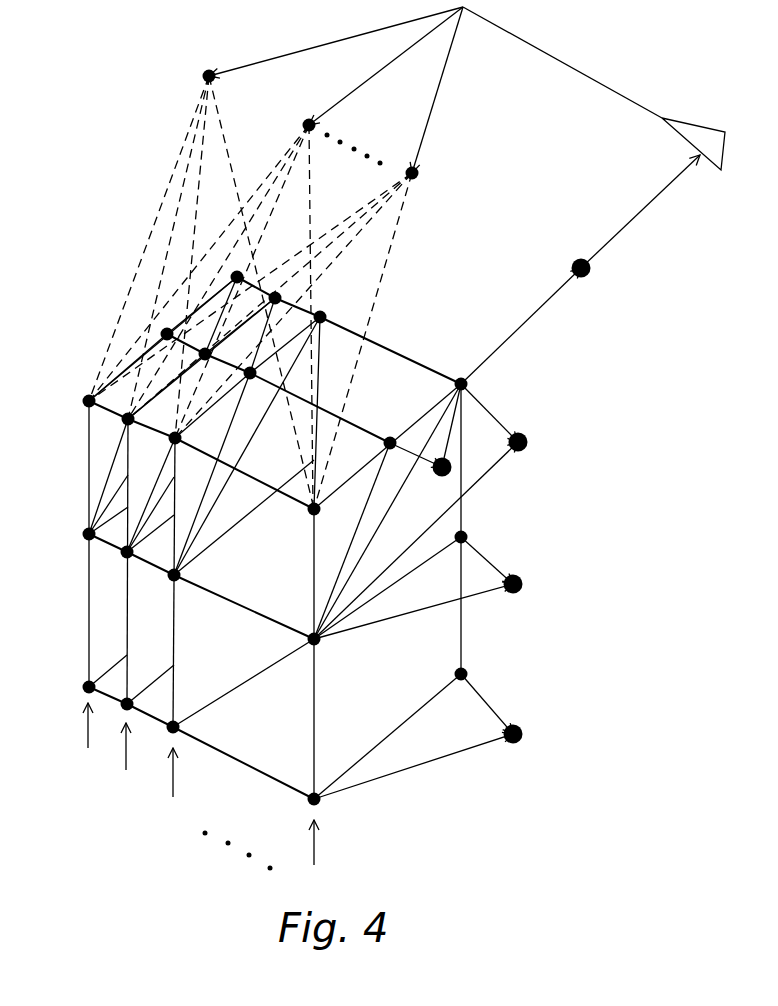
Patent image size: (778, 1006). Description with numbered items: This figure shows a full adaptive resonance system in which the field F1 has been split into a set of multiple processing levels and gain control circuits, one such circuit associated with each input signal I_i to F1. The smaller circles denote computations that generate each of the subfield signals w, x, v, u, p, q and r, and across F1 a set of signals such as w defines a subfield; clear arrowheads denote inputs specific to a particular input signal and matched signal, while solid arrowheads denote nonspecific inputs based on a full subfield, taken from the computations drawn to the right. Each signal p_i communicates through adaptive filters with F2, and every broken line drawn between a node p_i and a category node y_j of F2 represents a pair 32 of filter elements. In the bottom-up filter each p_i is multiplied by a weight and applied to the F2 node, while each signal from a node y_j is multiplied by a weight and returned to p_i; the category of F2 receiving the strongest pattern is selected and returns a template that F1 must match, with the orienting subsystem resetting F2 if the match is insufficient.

The pair of filter pathways 32 is at (369, 451).
The F1 field F1 is at (357, 525).
The F2 field F2 is at (110, 223).